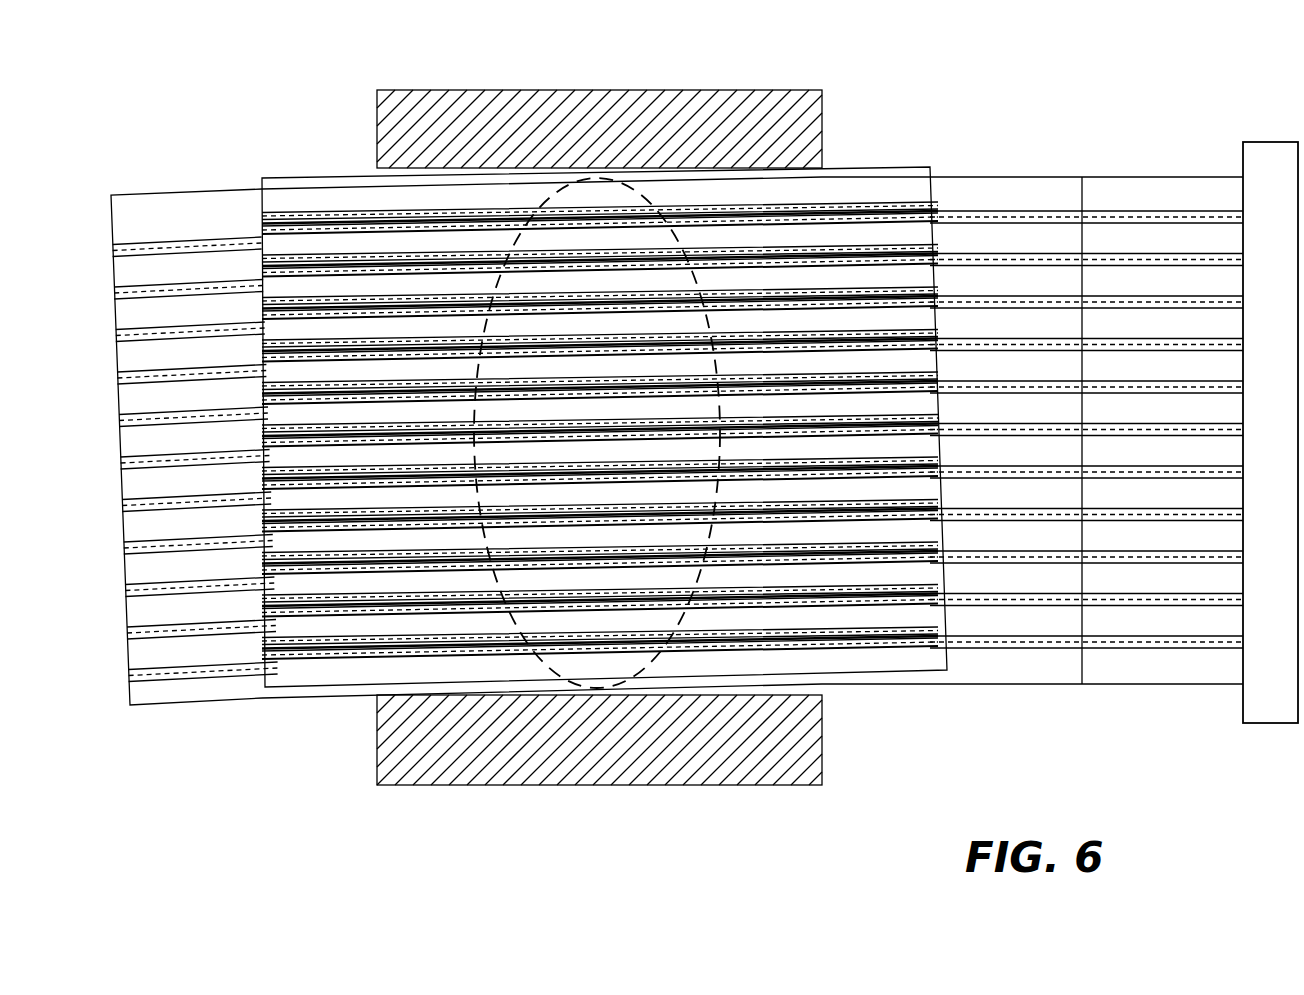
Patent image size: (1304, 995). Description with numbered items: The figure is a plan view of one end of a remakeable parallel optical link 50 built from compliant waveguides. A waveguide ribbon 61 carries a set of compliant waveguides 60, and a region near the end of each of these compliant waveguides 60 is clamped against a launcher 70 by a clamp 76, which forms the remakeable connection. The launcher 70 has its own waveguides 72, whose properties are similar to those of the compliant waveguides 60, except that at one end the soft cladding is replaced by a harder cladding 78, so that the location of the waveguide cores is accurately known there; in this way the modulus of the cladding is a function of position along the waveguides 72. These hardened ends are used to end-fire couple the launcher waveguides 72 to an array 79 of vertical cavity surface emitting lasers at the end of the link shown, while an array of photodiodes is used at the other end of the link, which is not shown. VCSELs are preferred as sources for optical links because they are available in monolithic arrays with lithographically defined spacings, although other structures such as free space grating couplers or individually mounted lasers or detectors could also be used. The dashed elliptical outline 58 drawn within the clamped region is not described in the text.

The remakeable parallel optical link 50 is at (834, 734).
The lens 58 is at (546, 688).
The compliant waveguides 60 is at (152, 226).
The waveguide ribbon 61 is at (189, 176).
The launcher 70 is at (1101, 693).
The waveguides 72 is at (1003, 217).
The clamp 76 is at (760, 785).
The harder cladding 78 is at (1163, 648).
The array of Vertical Cavity Surface Emitting Lasers 79 is at (1254, 160).